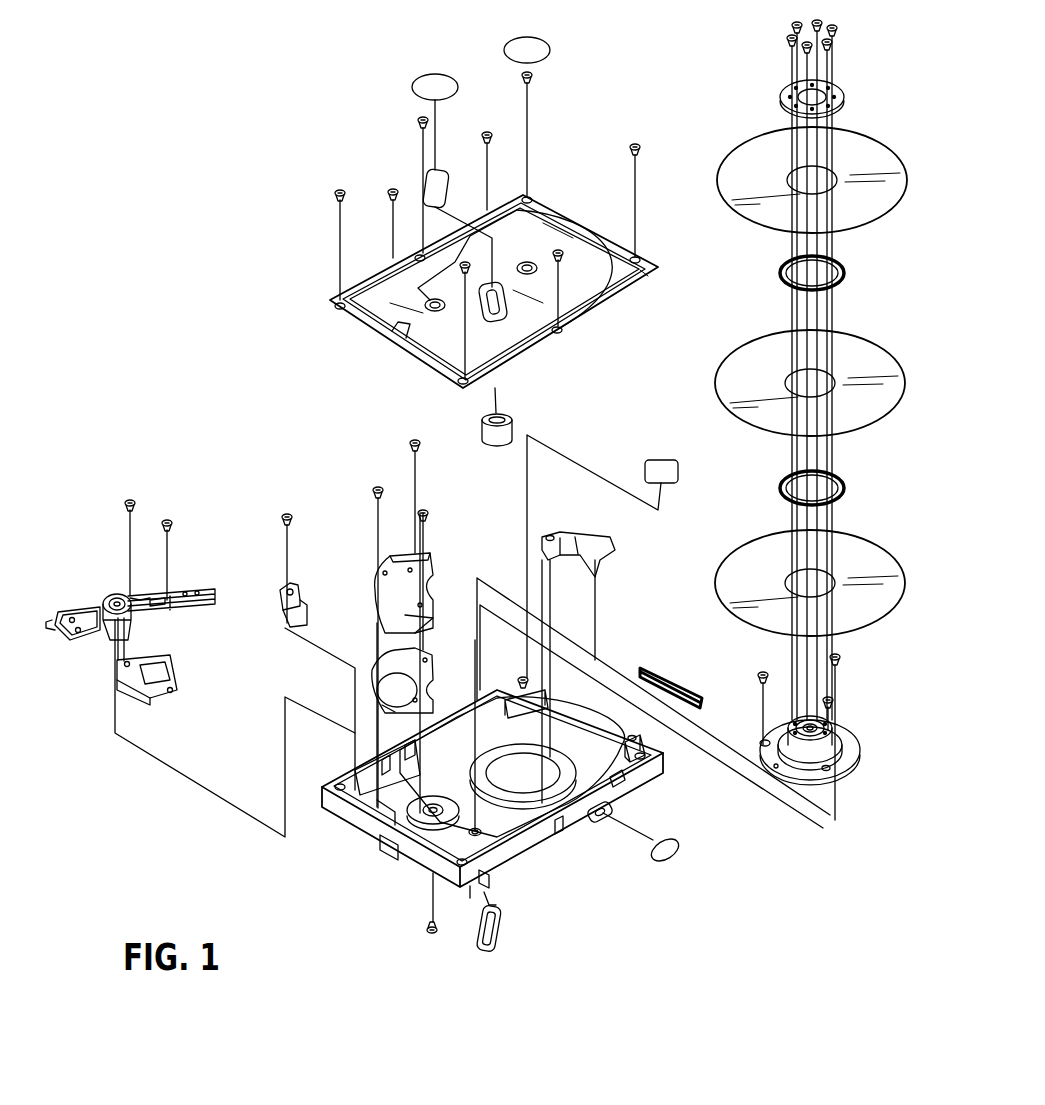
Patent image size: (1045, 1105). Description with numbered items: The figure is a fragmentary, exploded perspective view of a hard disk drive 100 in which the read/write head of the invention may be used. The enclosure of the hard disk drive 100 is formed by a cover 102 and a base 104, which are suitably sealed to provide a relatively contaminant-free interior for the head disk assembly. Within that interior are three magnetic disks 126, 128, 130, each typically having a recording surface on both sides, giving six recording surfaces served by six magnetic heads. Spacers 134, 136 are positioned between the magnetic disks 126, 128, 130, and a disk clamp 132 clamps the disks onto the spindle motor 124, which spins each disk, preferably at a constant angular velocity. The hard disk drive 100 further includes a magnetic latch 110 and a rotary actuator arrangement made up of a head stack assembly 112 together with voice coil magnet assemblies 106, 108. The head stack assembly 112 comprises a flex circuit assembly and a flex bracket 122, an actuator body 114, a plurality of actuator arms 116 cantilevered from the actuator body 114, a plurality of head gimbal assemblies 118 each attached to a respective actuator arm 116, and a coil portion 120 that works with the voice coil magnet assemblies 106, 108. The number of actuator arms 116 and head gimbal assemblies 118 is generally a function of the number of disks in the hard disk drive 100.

The hard disk drive 100 is at (208, 268).
The cover 102 is at (648, 285).
The base 104 is at (537, 860).
The voice coil magnet assembly 106 is at (373, 575).
The voice coil magnet assembly 108 is at (388, 688).
The magnetic latch 110 is at (305, 620).
The head stack assembly 112 is at (143, 590).
The actuator body 114 is at (112, 598).
The actuator arms 116 is at (150, 600).
The head gimbal assemblies 118 is at (207, 595).
The coil portion 120 is at (75, 643).
The flex bracket 122 is at (173, 660).
The spindle motor 124 is at (860, 747).
The magnetic disk 126 is at (735, 147).
The magnetic disk 128 is at (730, 353).
The magnetic disk 130 is at (728, 560).
The disk clamp 132 is at (782, 87).
The spacer 134 is at (782, 264).
The spacer 136 is at (780, 483).